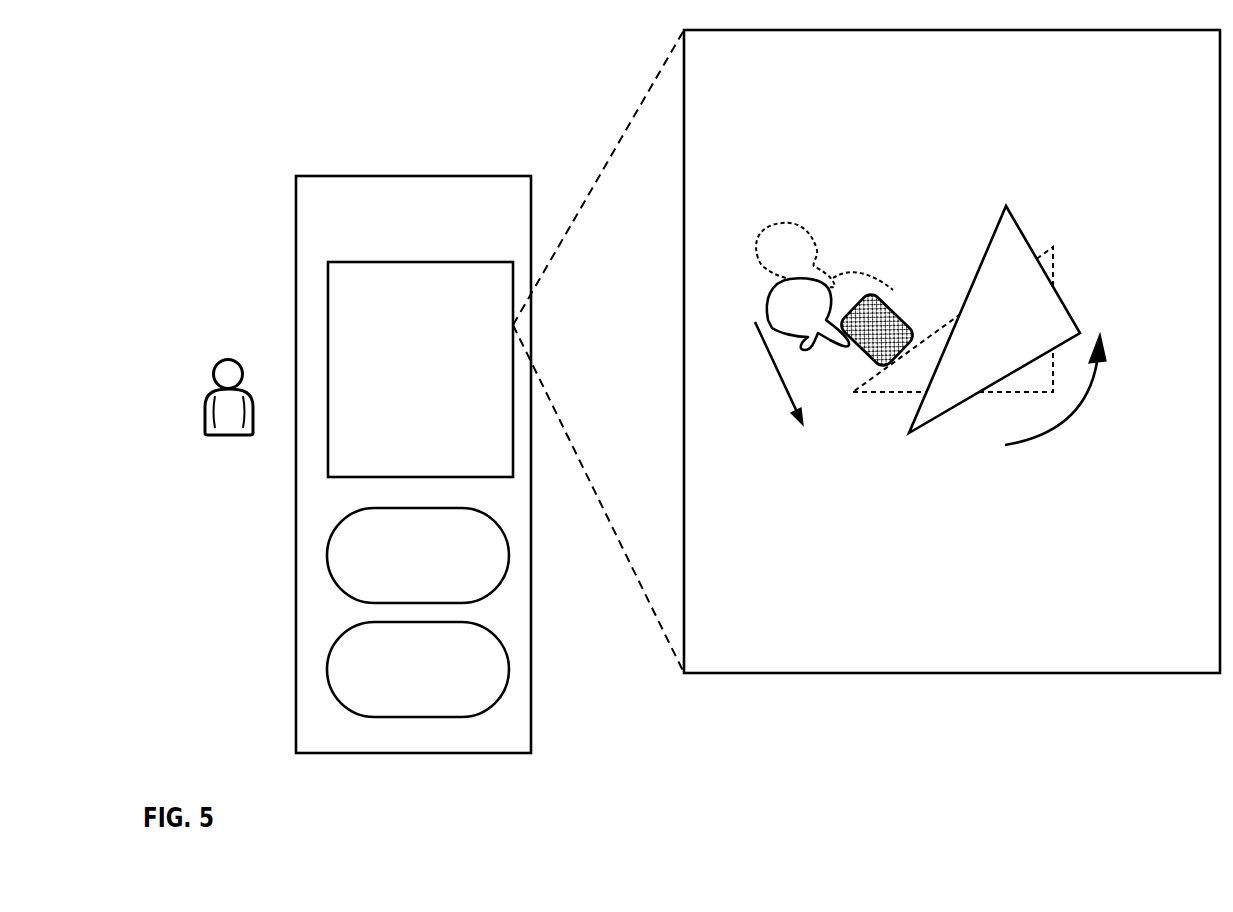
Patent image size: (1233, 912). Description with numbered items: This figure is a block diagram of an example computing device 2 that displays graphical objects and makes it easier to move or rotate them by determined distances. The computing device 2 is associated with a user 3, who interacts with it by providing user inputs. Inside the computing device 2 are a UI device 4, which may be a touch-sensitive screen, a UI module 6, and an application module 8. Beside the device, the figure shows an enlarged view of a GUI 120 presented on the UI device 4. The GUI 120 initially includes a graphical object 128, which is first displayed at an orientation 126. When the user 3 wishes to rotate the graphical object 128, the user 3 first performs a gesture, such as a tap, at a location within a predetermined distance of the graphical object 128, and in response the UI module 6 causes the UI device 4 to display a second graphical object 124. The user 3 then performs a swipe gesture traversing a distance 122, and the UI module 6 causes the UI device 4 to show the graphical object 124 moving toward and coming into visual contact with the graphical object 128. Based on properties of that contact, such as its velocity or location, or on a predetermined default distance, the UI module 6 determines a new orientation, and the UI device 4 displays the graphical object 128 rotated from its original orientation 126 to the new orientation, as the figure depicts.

The computing device 2 is at (412, 238).
The user 3 is at (223, 491).
The UI device 4 is at (413, 388).
The UI module 6 is at (412, 576).
The application module 8 is at (411, 701).
The GUI 120 is at (937, 80).
The distance 122 is at (817, 324).
The graphical object 124 is at (905, 303).
The orientation 126 is at (1057, 265).
The graphical object 128 is at (1015, 219).